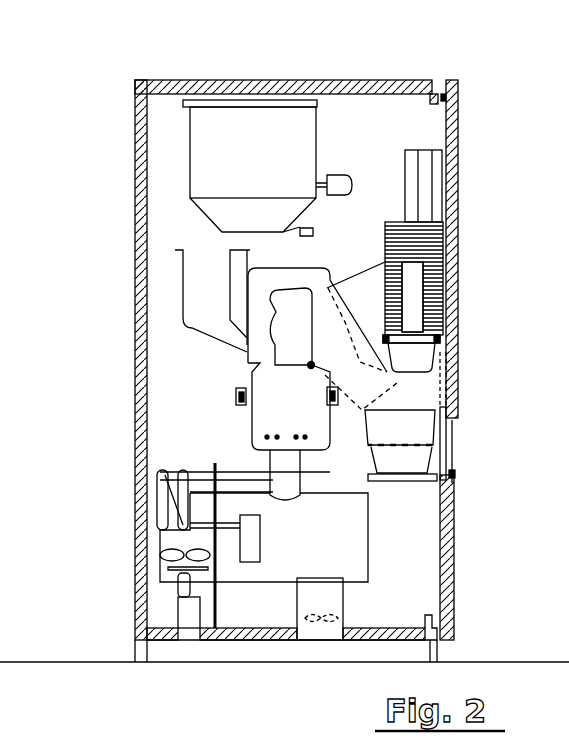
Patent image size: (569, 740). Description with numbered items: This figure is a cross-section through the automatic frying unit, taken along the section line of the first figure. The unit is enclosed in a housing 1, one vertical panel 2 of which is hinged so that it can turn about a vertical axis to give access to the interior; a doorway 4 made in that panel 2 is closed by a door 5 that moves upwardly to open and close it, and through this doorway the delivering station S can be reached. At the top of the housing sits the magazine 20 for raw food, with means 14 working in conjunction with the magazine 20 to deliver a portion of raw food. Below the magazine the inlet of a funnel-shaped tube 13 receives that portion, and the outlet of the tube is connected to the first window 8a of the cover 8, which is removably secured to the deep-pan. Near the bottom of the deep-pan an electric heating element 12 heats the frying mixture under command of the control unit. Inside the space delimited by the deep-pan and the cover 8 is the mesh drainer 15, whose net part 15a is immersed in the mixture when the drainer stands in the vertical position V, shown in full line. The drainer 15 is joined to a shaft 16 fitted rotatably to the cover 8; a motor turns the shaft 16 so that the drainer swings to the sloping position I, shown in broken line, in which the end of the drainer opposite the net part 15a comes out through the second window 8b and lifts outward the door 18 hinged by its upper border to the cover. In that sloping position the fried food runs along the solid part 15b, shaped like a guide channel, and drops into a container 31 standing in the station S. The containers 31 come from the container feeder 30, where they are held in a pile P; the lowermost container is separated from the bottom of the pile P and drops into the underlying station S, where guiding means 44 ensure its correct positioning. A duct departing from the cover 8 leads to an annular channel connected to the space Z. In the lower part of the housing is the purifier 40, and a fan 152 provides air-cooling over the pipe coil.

The housing 1 is at (241, 75).
The vertical panel 2 is at (453, 121).
The doorway 4 is at (455, 438).
The door 5 is at (455, 471).
The cover 8 is at (240, 303).
The first window 8a is at (240, 345).
The second window 8b is at (387, 250).
The electric heating element 12 is at (262, 438).
The funnel-shaped tube 13 is at (183, 316).
The delivering means 14 is at (333, 216).
The mesh drainer 15 is at (246, 252).
The net part 15a is at (252, 412).
The solid part 15b is at (260, 277).
The shaft 16 is at (311, 365).
The door 18 is at (402, 320).
The magazine 20 is at (330, 131).
The container feeder 30 is at (375, 229).
The container 31 is at (407, 353).
The purifier 40 is at (279, 538).
The guiding means 44 is at (397, 418).
The fan 152 is at (170, 557).
The sloping position I is at (347, 329).
The container pile P is at (452, 271).
The delivering station S is at (361, 466).
The vertical position V is at (256, 361).
The space Z is at (248, 272).